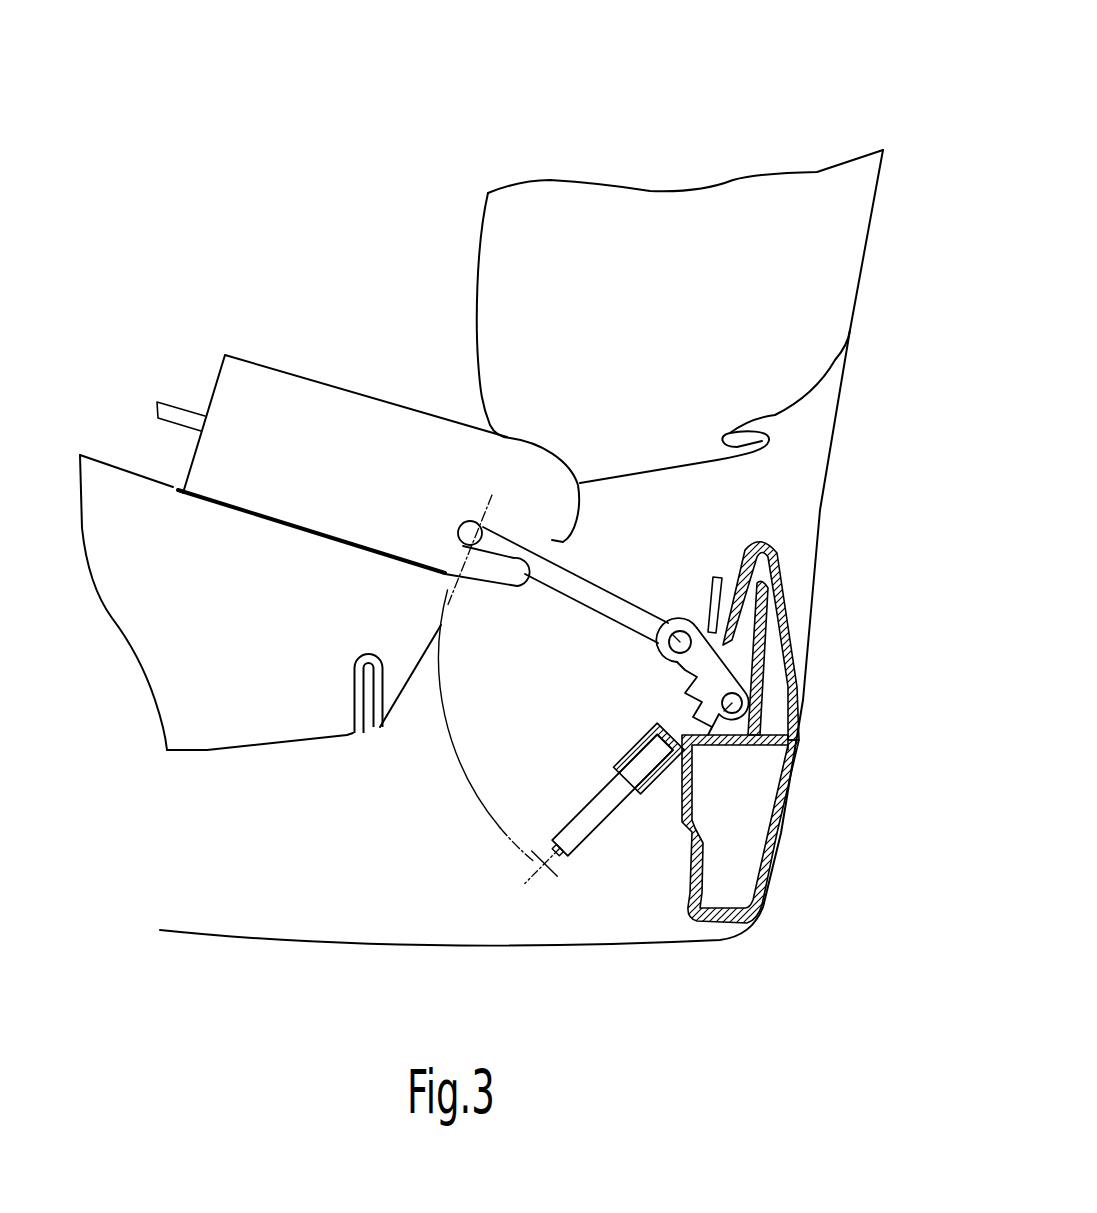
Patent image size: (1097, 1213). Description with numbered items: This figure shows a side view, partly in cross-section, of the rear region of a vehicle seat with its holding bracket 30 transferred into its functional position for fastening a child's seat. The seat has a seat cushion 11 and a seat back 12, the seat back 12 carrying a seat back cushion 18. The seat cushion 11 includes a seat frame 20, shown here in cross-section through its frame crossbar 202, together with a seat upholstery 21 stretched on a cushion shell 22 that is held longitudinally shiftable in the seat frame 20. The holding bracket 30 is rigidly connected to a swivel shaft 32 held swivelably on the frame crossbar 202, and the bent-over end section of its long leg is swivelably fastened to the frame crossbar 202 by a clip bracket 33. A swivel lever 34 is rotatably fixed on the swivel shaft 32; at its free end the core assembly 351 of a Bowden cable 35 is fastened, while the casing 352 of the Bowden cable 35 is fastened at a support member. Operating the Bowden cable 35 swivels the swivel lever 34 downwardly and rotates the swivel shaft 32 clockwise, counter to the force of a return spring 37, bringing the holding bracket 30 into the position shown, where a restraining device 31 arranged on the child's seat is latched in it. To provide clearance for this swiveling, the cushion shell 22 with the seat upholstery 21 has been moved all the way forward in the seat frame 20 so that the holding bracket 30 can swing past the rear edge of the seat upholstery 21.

The seat cushion 11 is at (107, 448).
The seat back 12 is at (807, 270).
The seat back cushion 18 is at (687, 230).
The seat frame 20 is at (737, 824).
The frame crossbar 202 is at (782, 745).
The seat upholstery 21 is at (177, 627).
The cushion shell 22 is at (237, 752).
The holding bracket 30 is at (582, 592).
The restraining device 31 is at (285, 417).
The swivel shaft 32 is at (685, 638).
The clip bracket 33 is at (775, 543).
The swivel lever 34 is at (710, 677).
The Bowden cable 35 is at (606, 826).
The core assembly 351 is at (547, 865).
The casing 352 is at (592, 803).
The return spring 37 is at (683, 689).